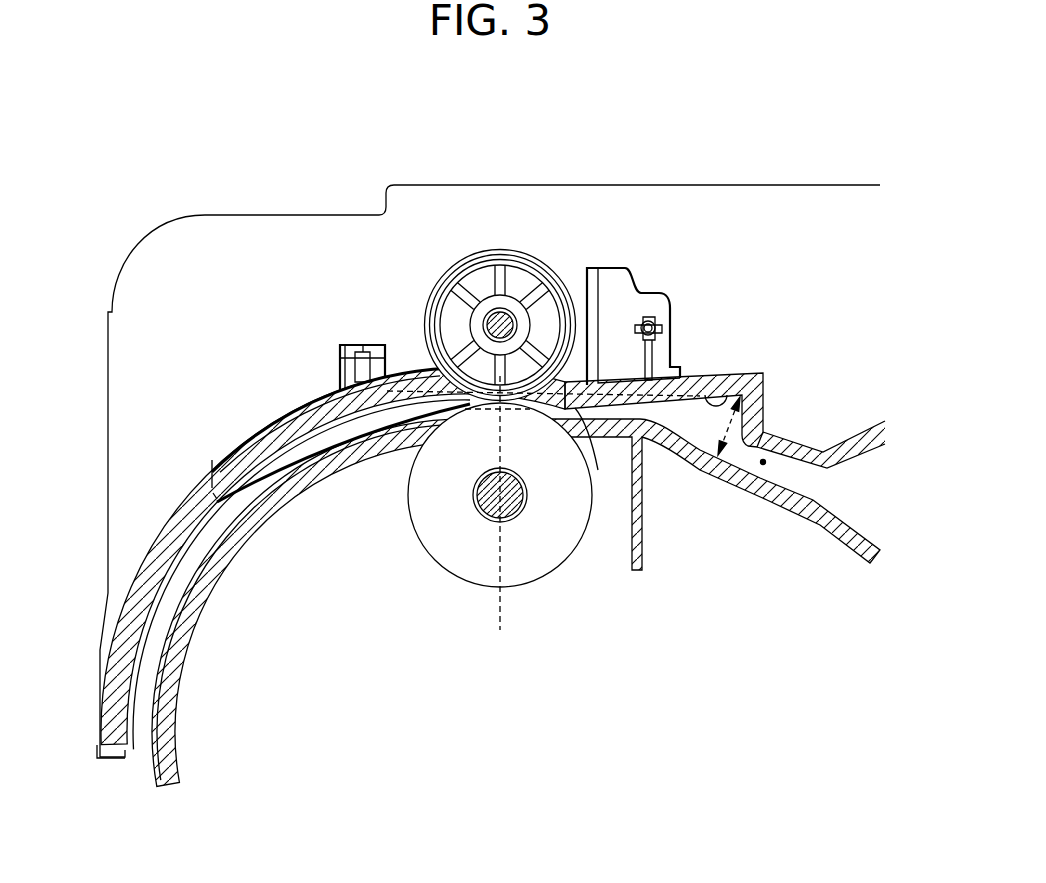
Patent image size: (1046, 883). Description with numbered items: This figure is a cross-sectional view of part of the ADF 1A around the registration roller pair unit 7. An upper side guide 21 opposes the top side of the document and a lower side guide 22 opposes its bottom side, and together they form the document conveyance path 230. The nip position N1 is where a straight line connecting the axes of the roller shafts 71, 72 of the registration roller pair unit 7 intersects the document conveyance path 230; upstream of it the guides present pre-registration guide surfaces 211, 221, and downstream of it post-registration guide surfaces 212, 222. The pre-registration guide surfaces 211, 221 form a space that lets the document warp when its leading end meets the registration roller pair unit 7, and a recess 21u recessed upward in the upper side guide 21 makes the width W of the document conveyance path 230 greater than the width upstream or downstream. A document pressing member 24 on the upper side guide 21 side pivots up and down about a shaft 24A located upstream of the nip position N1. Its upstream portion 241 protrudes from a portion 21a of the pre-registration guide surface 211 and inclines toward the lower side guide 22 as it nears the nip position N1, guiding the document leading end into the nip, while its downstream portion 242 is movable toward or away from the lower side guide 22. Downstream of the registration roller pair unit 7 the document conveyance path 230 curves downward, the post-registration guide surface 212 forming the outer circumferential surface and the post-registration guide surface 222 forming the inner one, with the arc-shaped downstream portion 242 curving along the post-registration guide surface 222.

The ADF 1A is at (178, 216).
The registration roller pair unit 7 is at (524, 252).
The roller shaft 71 is at (497, 315).
The roller shaft 72 is at (495, 518).
The upper side guide 21 is at (172, 516).
The portion of the pre-registration guide surface 21a is at (563, 411).
The recess 21u is at (713, 390).
The pre-registration guide surface 211 is at (820, 470).
The post-registration guide surface 212 is at (168, 580).
The lower side guide 22 is at (274, 512).
The pre-registration guide surface 221 is at (665, 426).
The post-registration guide surface 222 is at (178, 610).
The document conveyance path 230 is at (763, 465).
The document pressing member 24 is at (616, 266).
The shaft 24A is at (655, 318).
The upstream portion 241 is at (548, 405).
The downstream portion 242 is at (363, 432).
The width of the document conveyance path W is at (720, 426).
The nip position N1 is at (500, 516).